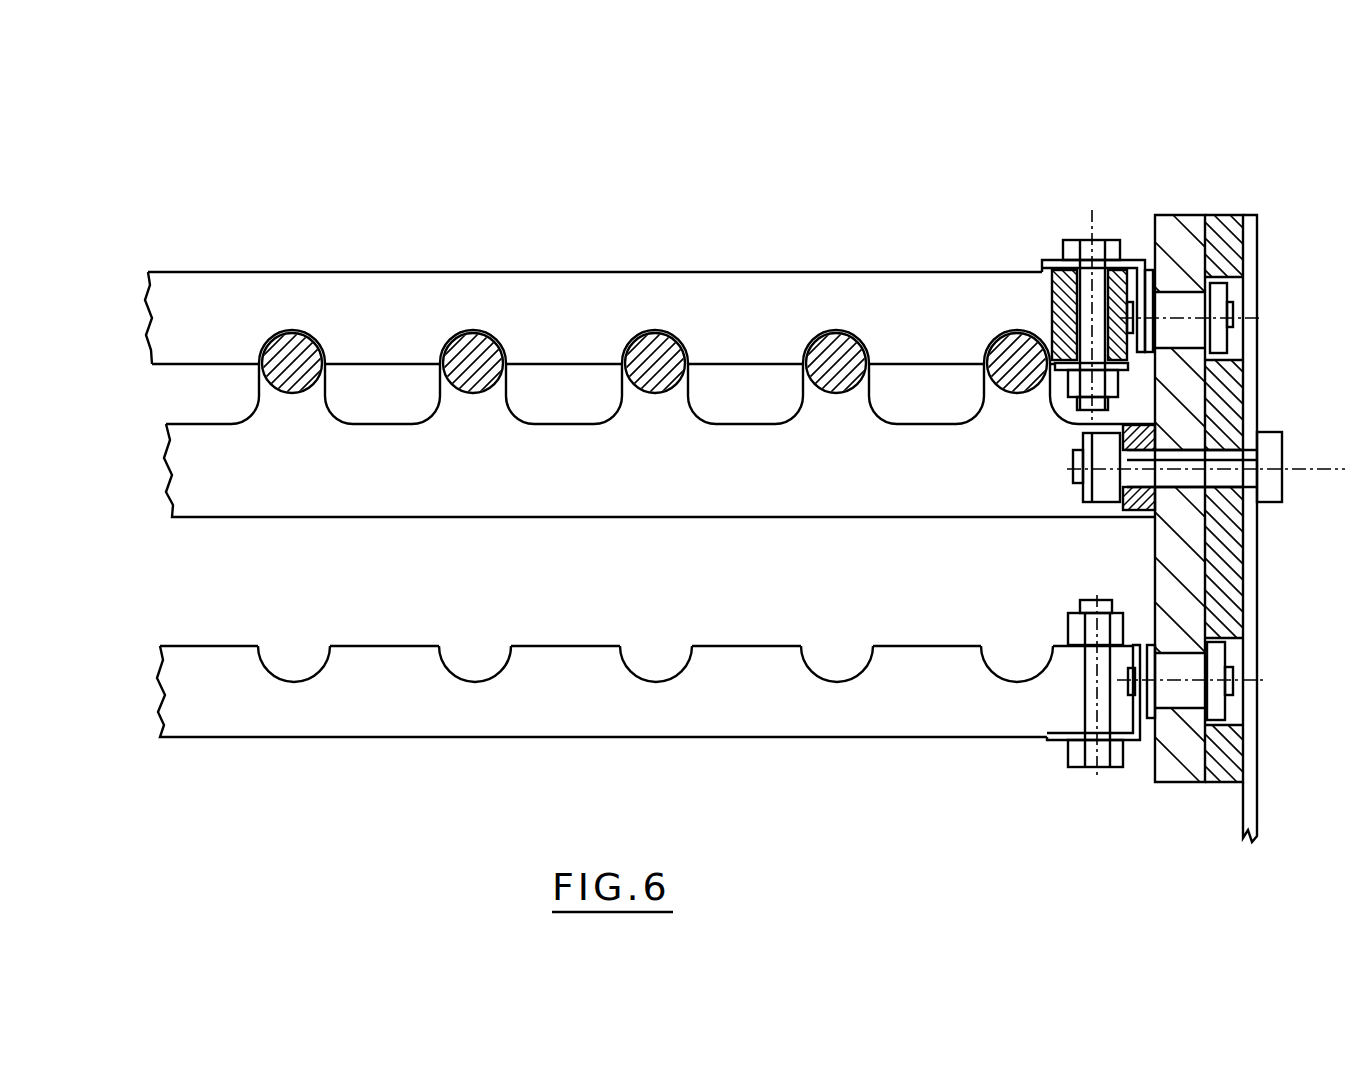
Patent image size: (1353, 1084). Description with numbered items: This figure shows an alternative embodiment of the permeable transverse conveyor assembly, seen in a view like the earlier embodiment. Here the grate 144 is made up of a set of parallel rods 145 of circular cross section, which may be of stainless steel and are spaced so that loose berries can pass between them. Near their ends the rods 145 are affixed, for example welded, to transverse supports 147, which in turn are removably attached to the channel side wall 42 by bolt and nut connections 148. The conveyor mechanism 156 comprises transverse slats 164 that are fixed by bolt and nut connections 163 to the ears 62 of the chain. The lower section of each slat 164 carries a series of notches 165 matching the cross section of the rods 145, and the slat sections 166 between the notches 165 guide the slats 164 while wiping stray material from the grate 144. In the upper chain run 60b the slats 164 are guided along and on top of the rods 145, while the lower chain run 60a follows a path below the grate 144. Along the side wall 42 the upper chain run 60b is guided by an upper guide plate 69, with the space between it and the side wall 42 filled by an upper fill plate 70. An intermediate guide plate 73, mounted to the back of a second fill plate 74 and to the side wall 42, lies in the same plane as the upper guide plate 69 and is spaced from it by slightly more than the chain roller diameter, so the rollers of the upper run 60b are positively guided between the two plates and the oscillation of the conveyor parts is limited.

The side wall 42 is at (1250, 597).
The lower chain run 60a is at (1197, 695).
The upper chain run 60b is at (1187, 335).
The ears 62 is at (1140, 262).
The upper guide plate 69 is at (1173, 214).
The upper fill plate 70 is at (1226, 214).
The intermediate guide plate 73 is at (1167, 570).
The second fill plate 74 is at (1235, 552).
The grate 144 is at (158, 408).
The rods 145 is at (294, 340).
The transverse supports 147 is at (628, 498).
The bolt and nut connections 148 is at (1272, 462).
The conveyor mechanism 156 is at (866, 230).
The bolt and nut connections 163 is at (1083, 260).
The transverse slats 164 is at (520, 272).
The recess 165 is at (472, 680).
The slat sections 166 is at (516, 345).